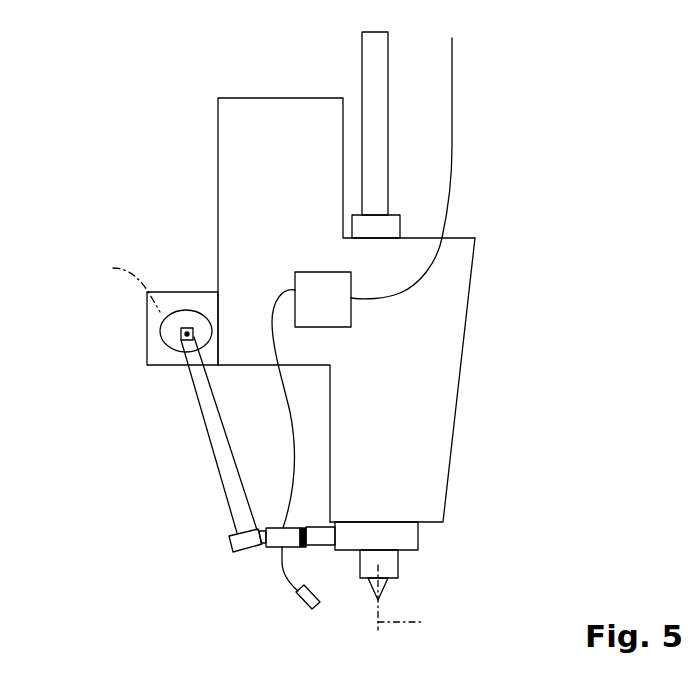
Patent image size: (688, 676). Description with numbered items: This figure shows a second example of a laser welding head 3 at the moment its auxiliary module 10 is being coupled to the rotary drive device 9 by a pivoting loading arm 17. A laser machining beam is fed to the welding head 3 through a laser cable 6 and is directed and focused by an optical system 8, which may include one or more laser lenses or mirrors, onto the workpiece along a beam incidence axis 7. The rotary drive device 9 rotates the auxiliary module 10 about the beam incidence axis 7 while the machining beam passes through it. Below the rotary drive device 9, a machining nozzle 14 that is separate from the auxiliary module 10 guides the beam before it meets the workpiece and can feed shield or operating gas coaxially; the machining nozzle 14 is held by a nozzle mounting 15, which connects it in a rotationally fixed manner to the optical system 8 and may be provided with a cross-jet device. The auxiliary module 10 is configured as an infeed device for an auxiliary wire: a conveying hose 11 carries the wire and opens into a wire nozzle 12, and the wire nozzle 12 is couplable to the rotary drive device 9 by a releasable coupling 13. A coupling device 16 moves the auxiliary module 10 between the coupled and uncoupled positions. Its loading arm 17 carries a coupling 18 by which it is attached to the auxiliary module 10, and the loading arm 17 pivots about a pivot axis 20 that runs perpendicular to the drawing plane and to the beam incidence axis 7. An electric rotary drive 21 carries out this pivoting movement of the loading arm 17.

The laser welding head 3 is at (101, 98).
The laser cable 6 is at (370, 52).
The beam incidence axis 7 is at (410, 608).
The optical system 8 is at (422, 413).
The rotary drive device 9 is at (400, 528).
The auxiliary module 10 is at (188, 603).
The conveying hose 11 is at (452, 105).
The wire nozzle 12 is at (297, 603).
The releasable coupling 13 is at (283, 540).
The machining nozzle 14 is at (387, 583).
The nozzle mounting 15 is at (375, 562).
The coupling device 16 is at (125, 342).
The loading arm 17 is at (215, 425).
The coupling 18 is at (233, 538).
The pivot axis 20 is at (116, 281).
The electric rotary drive 21 is at (172, 300).